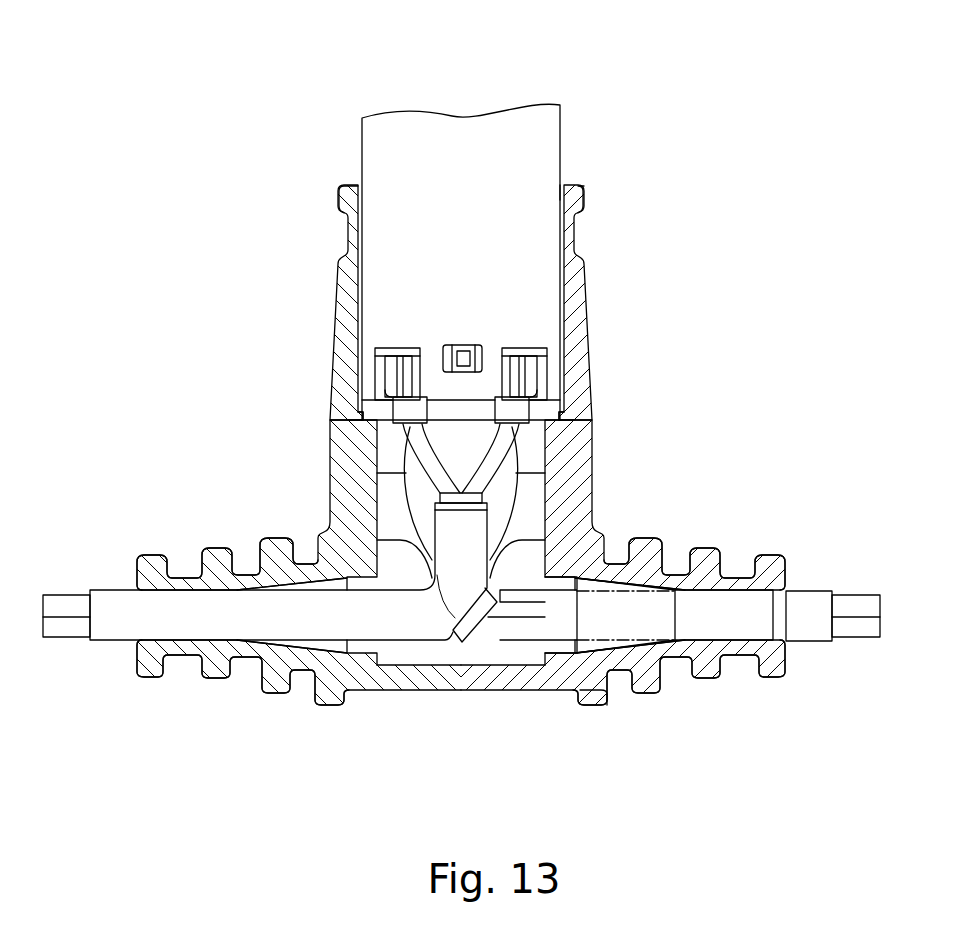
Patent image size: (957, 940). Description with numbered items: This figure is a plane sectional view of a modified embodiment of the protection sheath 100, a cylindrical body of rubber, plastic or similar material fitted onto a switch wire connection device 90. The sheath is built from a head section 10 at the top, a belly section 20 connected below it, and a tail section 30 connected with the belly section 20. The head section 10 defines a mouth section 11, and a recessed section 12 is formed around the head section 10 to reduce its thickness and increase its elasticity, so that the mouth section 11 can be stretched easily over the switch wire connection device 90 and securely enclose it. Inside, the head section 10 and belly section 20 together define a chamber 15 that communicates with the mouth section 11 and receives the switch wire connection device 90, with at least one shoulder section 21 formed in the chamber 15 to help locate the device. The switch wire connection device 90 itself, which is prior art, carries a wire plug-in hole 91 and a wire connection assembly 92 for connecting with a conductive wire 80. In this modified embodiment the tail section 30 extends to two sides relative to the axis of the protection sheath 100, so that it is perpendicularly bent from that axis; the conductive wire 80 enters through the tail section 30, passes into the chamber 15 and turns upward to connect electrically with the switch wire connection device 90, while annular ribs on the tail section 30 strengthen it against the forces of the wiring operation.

The protection sheath 100 is at (461, 421).
The head section 10 is at (459, 306).
The mouth section 11 is at (560, 193).
The recessed section 12 is at (343, 238).
The chamber 15 is at (393, 508).
The belly section 20 is at (594, 468).
The shoulder section 21 is at (352, 418).
The tail section 30 is at (461, 632).
The conductive wire 80 is at (120, 598).
The switch wire connection device 90 is at (502, 231).
The wire plug-in hole 91 is at (415, 420).
The wire connection assembly 92 is at (527, 370).